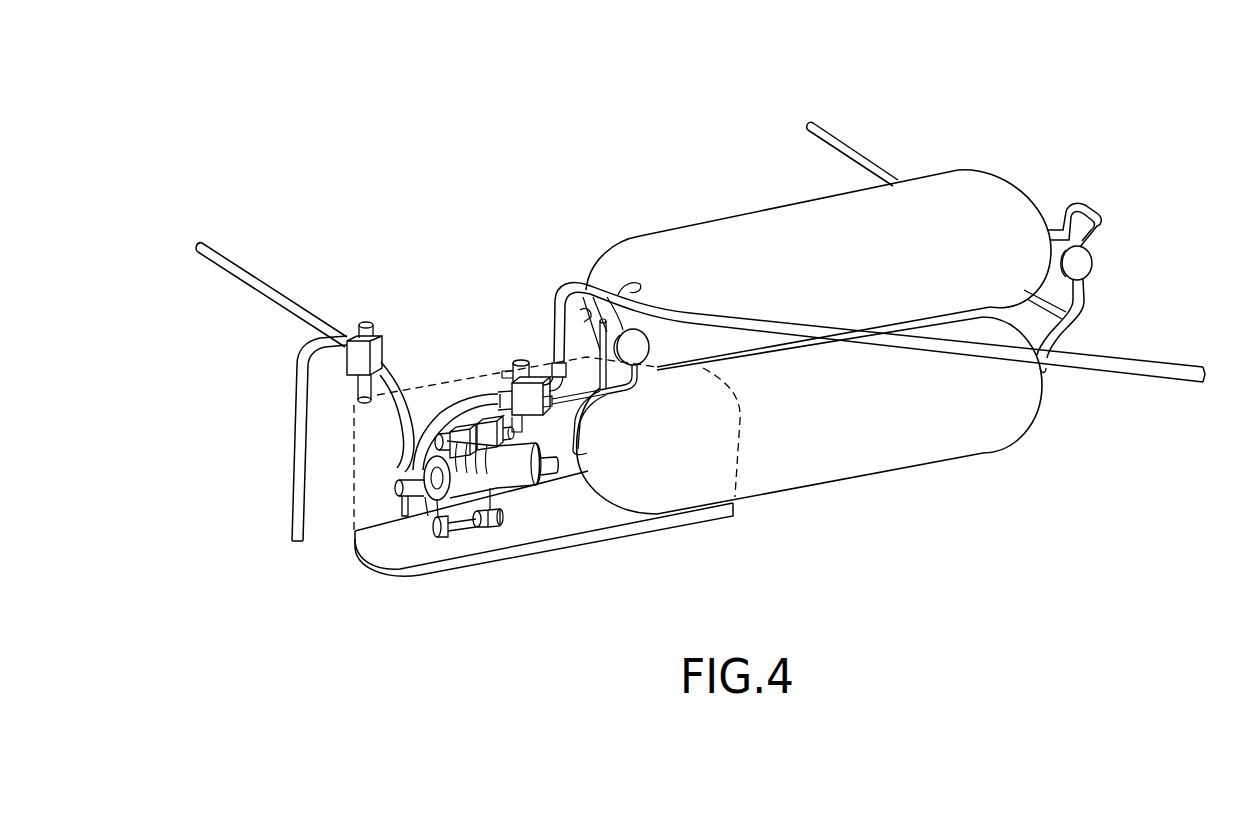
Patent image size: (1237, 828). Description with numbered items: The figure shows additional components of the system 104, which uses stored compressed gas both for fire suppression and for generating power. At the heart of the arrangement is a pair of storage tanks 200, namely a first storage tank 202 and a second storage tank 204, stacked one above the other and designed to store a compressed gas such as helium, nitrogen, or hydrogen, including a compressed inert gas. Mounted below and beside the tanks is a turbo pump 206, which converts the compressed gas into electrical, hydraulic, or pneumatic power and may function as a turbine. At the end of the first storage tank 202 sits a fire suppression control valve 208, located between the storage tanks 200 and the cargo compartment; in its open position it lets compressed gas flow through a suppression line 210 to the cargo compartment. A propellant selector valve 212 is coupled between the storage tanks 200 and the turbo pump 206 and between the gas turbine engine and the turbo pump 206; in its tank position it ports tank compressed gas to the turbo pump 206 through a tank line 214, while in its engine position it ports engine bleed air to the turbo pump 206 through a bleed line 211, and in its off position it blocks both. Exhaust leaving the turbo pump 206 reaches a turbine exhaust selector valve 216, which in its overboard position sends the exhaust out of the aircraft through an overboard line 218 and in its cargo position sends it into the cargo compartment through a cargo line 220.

The system 104 is at (691, 76).
The storage tank 200 is at (762, 200).
The first storage tank 202 is at (778, 284).
The second storage tank 204 is at (811, 427).
The turbo pump 206 is at (503, 490).
The fire suppression control valve 208 is at (1095, 263).
The suppression line 210 is at (845, 140).
The bleed line 211 is at (1088, 376).
The propellant selector valve 212 is at (516, 360).
The tank line 214 is at (627, 388).
The turbine exhaust selector valve 216 is at (367, 320).
The overboard line 218 is at (297, 439).
The cargo line 220 is at (244, 262).